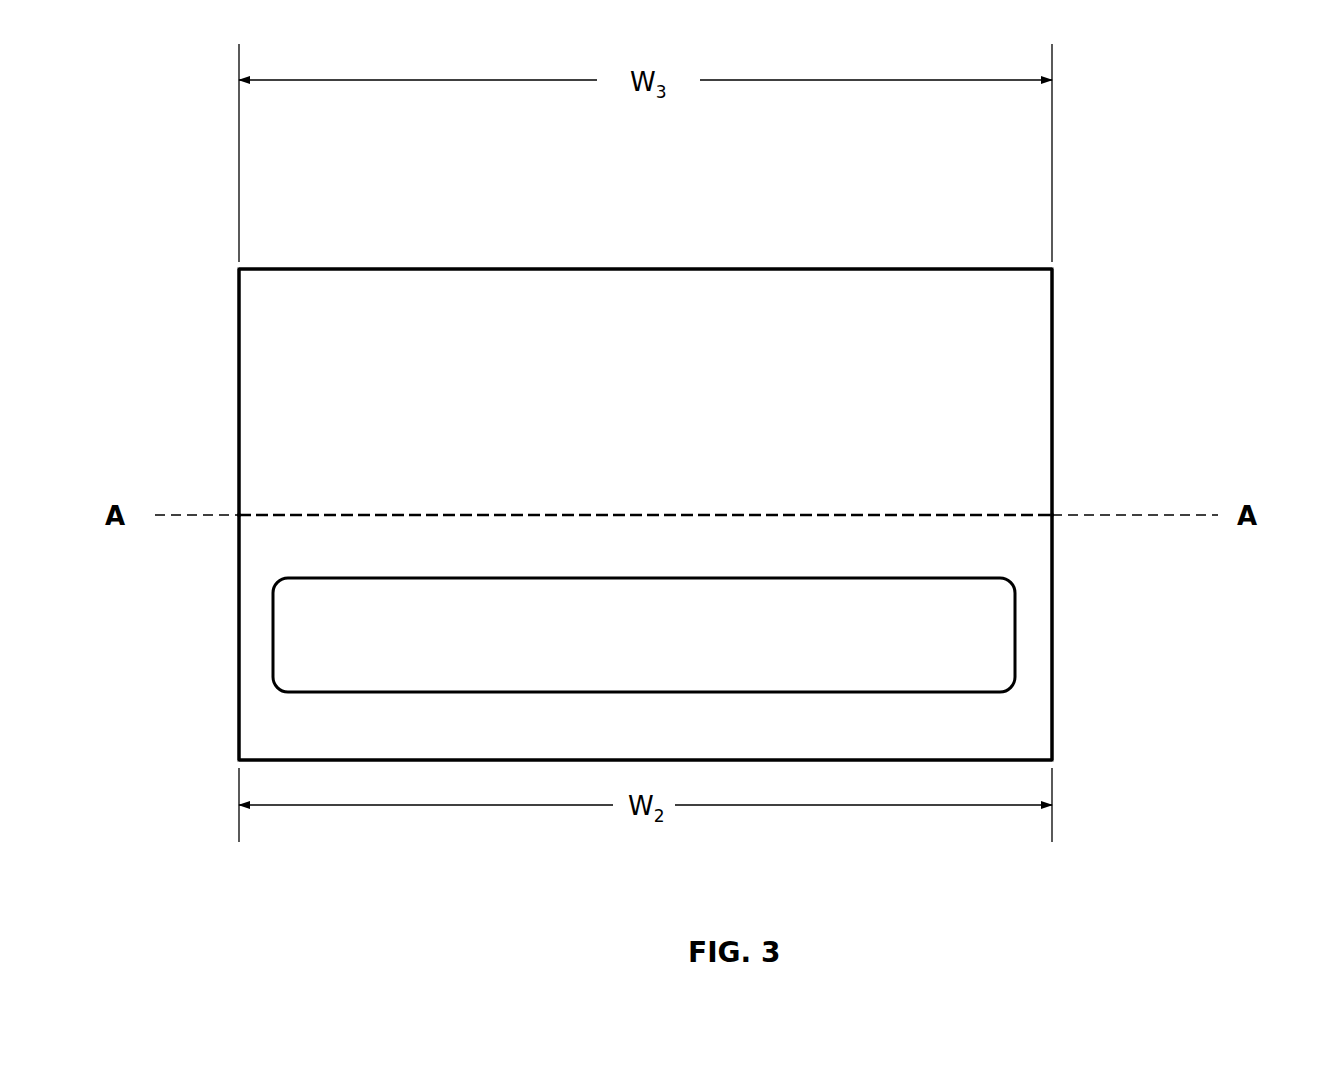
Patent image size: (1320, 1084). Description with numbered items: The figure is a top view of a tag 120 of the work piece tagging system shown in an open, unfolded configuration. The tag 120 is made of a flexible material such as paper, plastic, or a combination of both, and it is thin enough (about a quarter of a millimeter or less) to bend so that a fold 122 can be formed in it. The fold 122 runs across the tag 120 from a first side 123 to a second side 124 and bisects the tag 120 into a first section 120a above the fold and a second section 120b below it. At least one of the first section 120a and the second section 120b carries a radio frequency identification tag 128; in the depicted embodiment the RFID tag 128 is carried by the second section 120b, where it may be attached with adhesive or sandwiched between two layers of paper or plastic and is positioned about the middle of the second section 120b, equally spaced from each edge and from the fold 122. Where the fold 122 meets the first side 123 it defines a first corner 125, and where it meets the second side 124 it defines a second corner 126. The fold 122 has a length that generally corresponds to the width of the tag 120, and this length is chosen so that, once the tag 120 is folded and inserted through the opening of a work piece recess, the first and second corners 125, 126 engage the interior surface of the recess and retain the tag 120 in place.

The tag 120 is at (1142, 215).
The first section 120a is at (575, 293).
The second section 120b is at (1033, 690).
The fold 122 is at (543, 515).
The first side 123 is at (212, 570).
The second side 124 is at (1080, 570).
The first corner 125 is at (239, 515).
The second corner 126 is at (1052, 515).
The radio frequency identification (RFID) tag 128 is at (1015, 637).